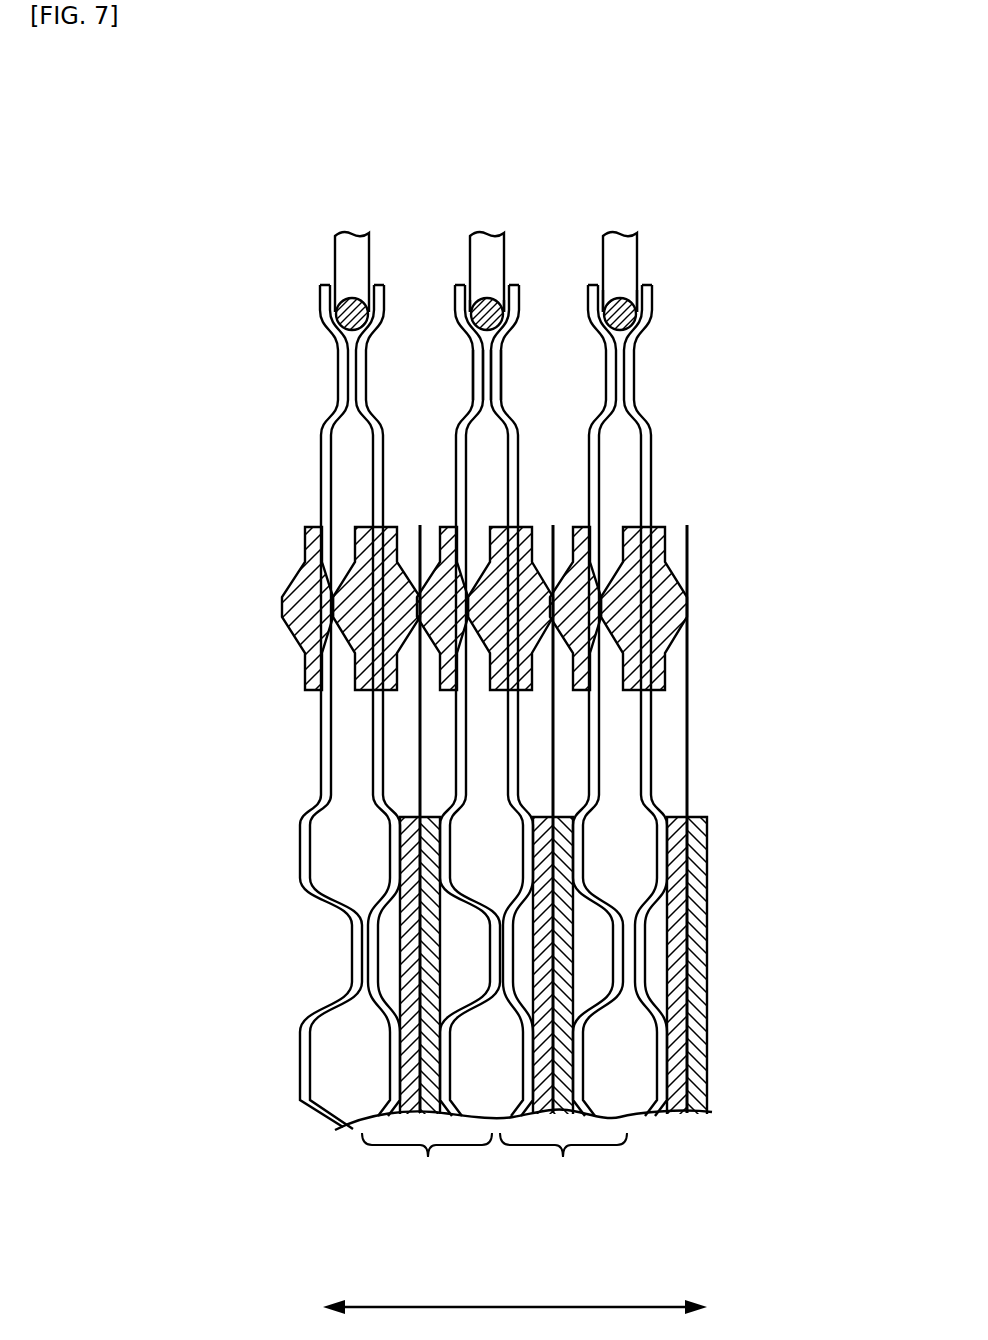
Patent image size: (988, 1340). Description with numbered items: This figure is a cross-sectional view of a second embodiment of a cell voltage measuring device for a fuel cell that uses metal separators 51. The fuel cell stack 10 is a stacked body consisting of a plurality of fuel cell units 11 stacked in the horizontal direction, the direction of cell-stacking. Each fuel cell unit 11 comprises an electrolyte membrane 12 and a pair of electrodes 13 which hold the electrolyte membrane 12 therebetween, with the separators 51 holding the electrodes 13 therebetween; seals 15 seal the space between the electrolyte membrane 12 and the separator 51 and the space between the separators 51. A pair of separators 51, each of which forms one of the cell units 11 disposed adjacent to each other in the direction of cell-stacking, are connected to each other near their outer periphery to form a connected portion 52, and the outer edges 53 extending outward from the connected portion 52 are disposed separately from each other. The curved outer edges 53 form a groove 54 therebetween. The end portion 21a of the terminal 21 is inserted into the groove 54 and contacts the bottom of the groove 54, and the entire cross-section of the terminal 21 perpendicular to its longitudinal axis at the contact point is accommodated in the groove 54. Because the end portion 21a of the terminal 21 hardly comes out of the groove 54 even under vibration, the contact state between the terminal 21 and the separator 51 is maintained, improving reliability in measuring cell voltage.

The fuel cell stack 10 is at (458, 206).
The fuel cell unit 11 is at (494, 1166).
The electrolyte membrane 12 is at (420, 527).
The electrode 13 is at (400, 950).
The seal 15 is at (390, 690).
The terminal 21 is at (638, 242).
The end portion of the terminal 21a is at (652, 302).
The metal separator 51 is at (456, 434).
The connected portion 52 is at (502, 370).
The outer edge 53 is at (456, 296).
The groove 54 is at (497, 285).